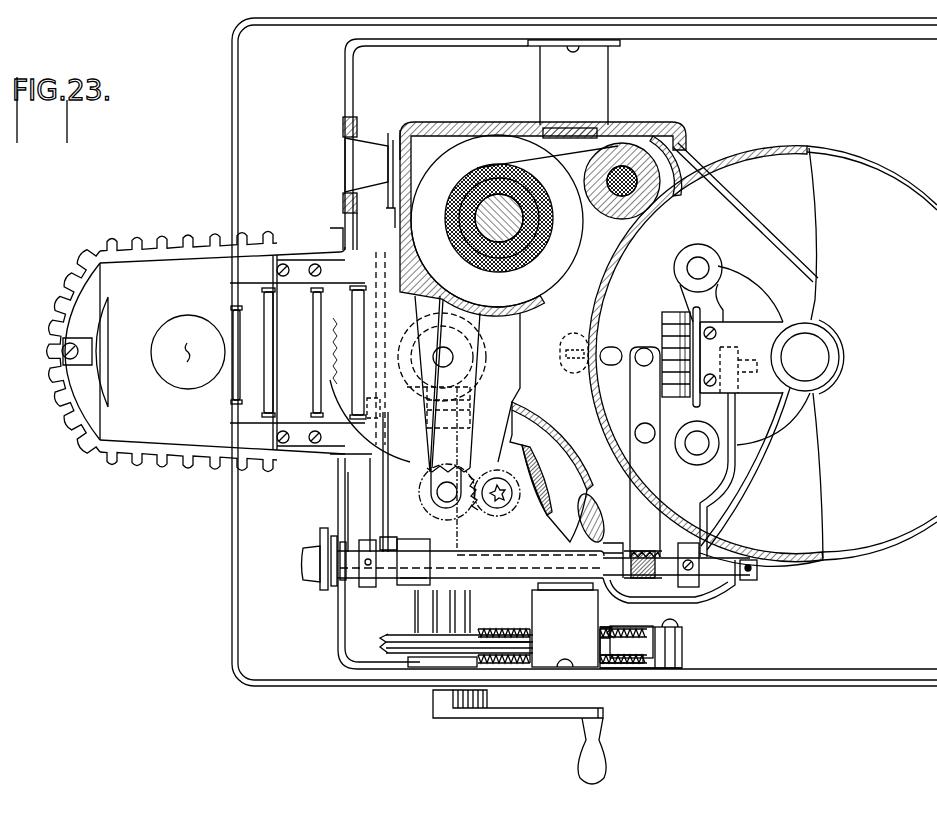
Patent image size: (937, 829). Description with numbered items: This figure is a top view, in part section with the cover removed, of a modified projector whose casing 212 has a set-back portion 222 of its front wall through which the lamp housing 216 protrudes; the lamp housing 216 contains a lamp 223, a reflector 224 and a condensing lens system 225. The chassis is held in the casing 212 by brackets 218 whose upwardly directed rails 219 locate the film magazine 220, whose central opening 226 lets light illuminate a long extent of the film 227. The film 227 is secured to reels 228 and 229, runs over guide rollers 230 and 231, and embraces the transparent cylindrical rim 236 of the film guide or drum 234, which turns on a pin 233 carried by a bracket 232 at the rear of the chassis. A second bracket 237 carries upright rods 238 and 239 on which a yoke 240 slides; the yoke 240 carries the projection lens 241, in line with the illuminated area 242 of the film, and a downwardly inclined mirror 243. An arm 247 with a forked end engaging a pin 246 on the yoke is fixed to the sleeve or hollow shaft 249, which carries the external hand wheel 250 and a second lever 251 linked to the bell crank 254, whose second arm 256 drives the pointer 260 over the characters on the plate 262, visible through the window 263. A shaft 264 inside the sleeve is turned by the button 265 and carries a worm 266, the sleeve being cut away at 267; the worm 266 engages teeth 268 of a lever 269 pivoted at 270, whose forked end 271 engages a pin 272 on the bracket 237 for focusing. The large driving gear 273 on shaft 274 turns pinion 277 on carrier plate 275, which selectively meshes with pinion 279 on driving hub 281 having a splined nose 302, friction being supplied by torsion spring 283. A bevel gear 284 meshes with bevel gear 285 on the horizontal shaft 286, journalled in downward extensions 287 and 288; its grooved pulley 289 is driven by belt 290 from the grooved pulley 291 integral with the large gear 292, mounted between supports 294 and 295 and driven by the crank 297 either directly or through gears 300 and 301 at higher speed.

The casing 212 is at (366, 680).
The lamp housing 216 is at (140, 250).
The brackets 218 is at (608, 79).
The rails 219 is at (596, 127).
The film magazine 220 is at (476, 124).
The set-back portion 222 is at (342, 497).
The lamp 223 is at (180, 320).
The reflector 224 is at (108, 382).
The condensing lens system 225 is at (258, 380).
The central opening 226 is at (526, 386).
The film 227 is at (600, 150).
The reel 228 is at (503, 140).
The reel 229 is at (536, 428).
The guide roller 230 is at (606, 215).
The guide roller 231 is at (606, 494).
The bracket 232 is at (771, 496).
The pin 233 is at (825, 356).
The film guide or drum 234 is at (852, 160).
The cylindrical rim 236 is at (790, 562).
The second bracket 237 is at (658, 334).
The upright rod 238 is at (705, 448).
The upright rod 239 is at (702, 268).
The yoke 240 is at (717, 302).
The projection lens 241 is at (672, 314).
The illuminated area 242 is at (594, 340).
The mirror 243 is at (742, 326).
The pin 246 is at (752, 350).
The arm 247 is at (738, 412).
The sleeve or hollow shaft 249 is at (518, 555).
The hand wheel 250 is at (323, 586).
The second lever 251 is at (368, 588).
The bell crank 254 is at (388, 512).
The second arm 256 is at (352, 220).
The pointer 260 is at (390, 146).
The plate 262 is at (410, 138).
The window 263 is at (350, 158).
The shaft 264 is at (612, 556).
The knob or button 265 is at (300, 567).
The worm 266 is at (668, 556).
The cut-away 267 is at (626, 580).
The teeth 268 is at (643, 550).
The lever 269 is at (660, 480).
The pivot 270 is at (637, 428).
The forked end 271 is at (612, 348).
The pin 272 is at (642, 350).
The large driving gear 273 is at (323, 348).
The shaft 274 is at (436, 360).
The carrier plate 275 is at (474, 382).
The pinion 277 is at (472, 505).
The pinion 279 is at (479, 477).
The driving hub 281 is at (502, 480).
The torsion spring 283 is at (456, 334).
The bevel gear 284 is at (487, 349).
The bevel gear 285 is at (480, 393).
The horizontal shaft 286 is at (430, 522).
The downward extension 287 is at (412, 606).
The downward extension 288 is at (478, 402).
The grooved pulley 289 is at (400, 633).
The belt 290 is at (371, 643).
The grooved pulley 291 is at (616, 632).
The large gear 292 is at (634, 655).
The support 294 is at (656, 624).
The support 295 is at (655, 665).
The crank 297 is at (515, 712).
The gear 300 is at (487, 628).
The gear 301 is at (518, 630).
The splined nose 302 is at (500, 500).